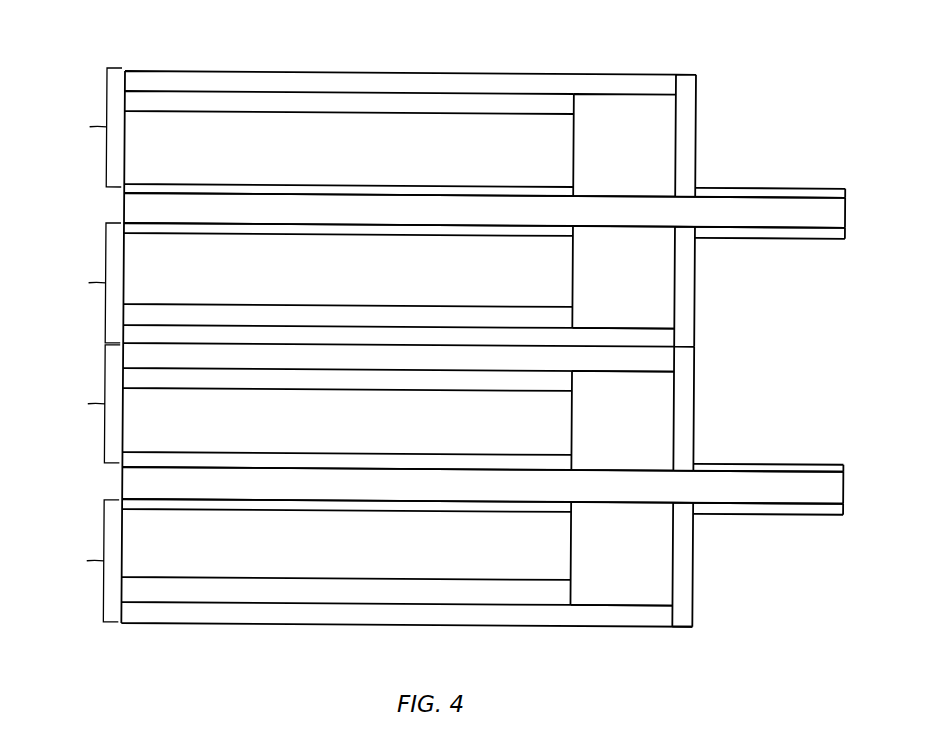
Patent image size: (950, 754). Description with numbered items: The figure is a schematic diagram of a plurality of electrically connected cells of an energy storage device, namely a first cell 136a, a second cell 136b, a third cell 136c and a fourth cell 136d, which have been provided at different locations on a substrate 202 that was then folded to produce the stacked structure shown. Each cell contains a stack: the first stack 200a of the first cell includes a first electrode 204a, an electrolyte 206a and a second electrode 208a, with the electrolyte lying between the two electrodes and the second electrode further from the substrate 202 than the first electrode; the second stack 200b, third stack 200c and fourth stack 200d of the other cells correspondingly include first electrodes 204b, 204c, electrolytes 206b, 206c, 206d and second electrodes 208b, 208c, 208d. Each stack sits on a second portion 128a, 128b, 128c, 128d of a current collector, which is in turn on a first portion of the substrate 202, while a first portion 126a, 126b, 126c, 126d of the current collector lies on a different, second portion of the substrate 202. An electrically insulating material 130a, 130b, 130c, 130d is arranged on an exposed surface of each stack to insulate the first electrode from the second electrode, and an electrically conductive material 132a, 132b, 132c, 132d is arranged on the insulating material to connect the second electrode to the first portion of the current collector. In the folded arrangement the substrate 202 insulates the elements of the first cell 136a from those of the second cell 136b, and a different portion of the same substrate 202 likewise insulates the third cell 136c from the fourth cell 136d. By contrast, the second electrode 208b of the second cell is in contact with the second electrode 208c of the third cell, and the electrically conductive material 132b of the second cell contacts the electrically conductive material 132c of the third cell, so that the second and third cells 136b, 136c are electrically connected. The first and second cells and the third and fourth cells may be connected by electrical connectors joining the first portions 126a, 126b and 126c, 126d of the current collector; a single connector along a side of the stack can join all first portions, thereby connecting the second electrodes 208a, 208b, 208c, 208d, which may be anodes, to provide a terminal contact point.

The first stack 200a is at (69, 127).
The second stack 200b is at (68, 282).
The third stack 200c is at (67, 403).
The fourth stack 200d is at (66, 560).
The substrate 202 is at (847, 213).
The first electrode 204a is at (396, 166).
The first electrode 204b is at (396, 282).
The first electrode 204c is at (391, 429).
The electrolyte 206a is at (233, 91).
The electrolyte 206b is at (238, 302).
The electrolyte 206c is at (307, 391).
The electrolyte 206d is at (217, 603).
The second electrode 208a is at (398, 70).
The second electrode 208b is at (325, 325).
The second electrode 208c is at (210, 368).
The second electrode 208d is at (323, 624).
The second portion of the current collector 128a is at (245, 183).
The second portion of the current collector 128b is at (241, 222).
The second portion of the current collector 128c is at (502, 453).
The second portion of the current collector 128d is at (255, 511).
The electrically insulating material 130a is at (654, 159).
The electrically insulating material 130b is at (654, 294).
The electrically insulating material 130c is at (654, 439).
The electrically insulating material 130d is at (654, 575).
The electrically conductive material 132a is at (697, 118).
The electrically conductive material 132b is at (697, 324).
The electrically conductive material 132c is at (697, 394).
The electrically conductive material 132d is at (693, 600).
The first portion of the current collector 126a is at (771, 184).
The first portion of the current collector 126b is at (772, 235).
The first portion of the current collector 126c is at (771, 460).
The first portion of the current collector 126d is at (771, 512).
The first cell 136a is at (846, 111).
The second cell 136b is at (837, 285).
The third cell 136c is at (831, 402).
The fourth cell 136d is at (826, 566).